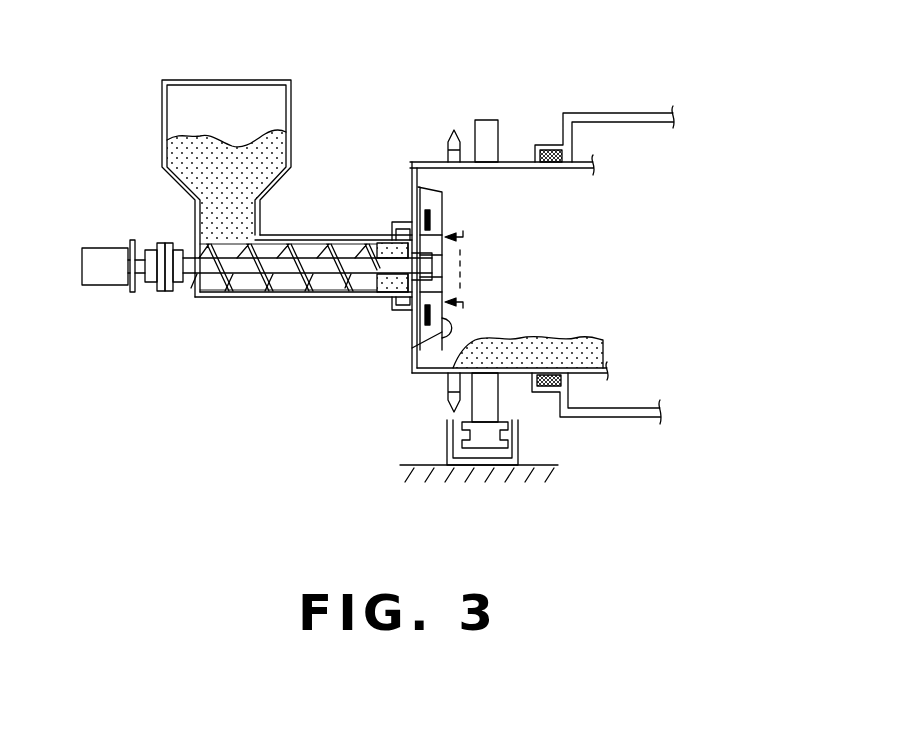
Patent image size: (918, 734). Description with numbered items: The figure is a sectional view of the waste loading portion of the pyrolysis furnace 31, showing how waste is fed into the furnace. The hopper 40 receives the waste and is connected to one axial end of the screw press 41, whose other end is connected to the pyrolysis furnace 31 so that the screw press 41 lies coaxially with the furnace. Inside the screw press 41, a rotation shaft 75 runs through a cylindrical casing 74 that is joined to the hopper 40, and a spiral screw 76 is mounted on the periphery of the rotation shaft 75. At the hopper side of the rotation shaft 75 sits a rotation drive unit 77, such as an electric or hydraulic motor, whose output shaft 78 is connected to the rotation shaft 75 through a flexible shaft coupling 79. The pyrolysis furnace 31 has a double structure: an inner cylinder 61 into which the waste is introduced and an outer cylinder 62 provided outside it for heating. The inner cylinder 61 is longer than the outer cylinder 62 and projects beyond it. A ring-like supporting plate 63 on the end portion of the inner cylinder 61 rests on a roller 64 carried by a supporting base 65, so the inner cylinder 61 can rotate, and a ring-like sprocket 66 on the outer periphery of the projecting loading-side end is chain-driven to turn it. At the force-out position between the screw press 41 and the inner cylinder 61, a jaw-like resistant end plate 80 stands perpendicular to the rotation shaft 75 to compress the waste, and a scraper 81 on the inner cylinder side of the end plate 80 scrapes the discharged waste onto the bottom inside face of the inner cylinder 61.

The pyrolysis furnace 31 is at (695, 98).
The hopper 40 is at (291, 122).
The screw press 41 is at (218, 317).
The inner cylinder 61 is at (517, 160).
The outer cylinder 62 is at (632, 113).
The supporting plate 63 is at (488, 130).
The roller 64 is at (505, 435).
The supporting base 65 is at (445, 445).
The sprocket 66 is at (444, 140).
The cylindrical casing 74 is at (317, 292).
The rotation shaft 75 is at (280, 270).
The spiral screw 76 is at (347, 300).
The rotation drive unit 77 is at (100, 277).
The output shaft 78 is at (143, 267).
The flexible shaft coupling 79 is at (167, 293).
The end plate 80 is at (447, 217).
The scraper 81 is at (412, 348).